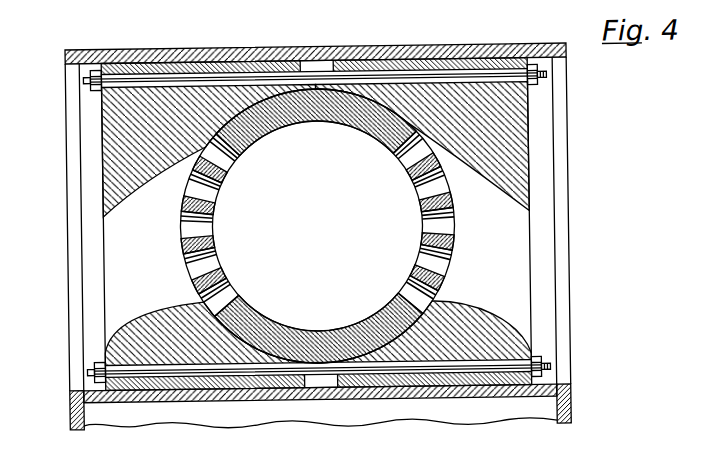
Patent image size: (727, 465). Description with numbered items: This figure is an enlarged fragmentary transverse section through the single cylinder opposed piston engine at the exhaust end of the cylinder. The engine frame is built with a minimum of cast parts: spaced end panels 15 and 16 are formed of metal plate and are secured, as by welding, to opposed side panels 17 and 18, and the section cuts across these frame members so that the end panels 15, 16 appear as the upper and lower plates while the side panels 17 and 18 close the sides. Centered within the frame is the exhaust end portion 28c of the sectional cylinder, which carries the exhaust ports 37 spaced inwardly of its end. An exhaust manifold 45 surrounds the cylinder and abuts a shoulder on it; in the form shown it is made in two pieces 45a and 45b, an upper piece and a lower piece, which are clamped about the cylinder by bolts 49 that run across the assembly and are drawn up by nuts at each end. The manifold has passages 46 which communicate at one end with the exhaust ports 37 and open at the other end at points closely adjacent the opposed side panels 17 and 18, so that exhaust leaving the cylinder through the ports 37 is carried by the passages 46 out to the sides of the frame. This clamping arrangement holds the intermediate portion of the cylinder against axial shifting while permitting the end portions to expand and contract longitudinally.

The end panel 15 is at (420, 50).
The end panel 16 is at (455, 405).
The side panel 17 is at (67, 415).
The side panel 18 is at (560, 407).
The exhaust end portion 28c is at (344, 126).
The exhaust ports 37 is at (424, 297).
The exhaust manifold 45 is at (321, 149).
The exhaust manifold piece 45a is at (512, 121).
The exhaust manifold piece 45b is at (122, 136).
The passages 46 is at (498, 178).
The bolts 49 is at (113, 370).